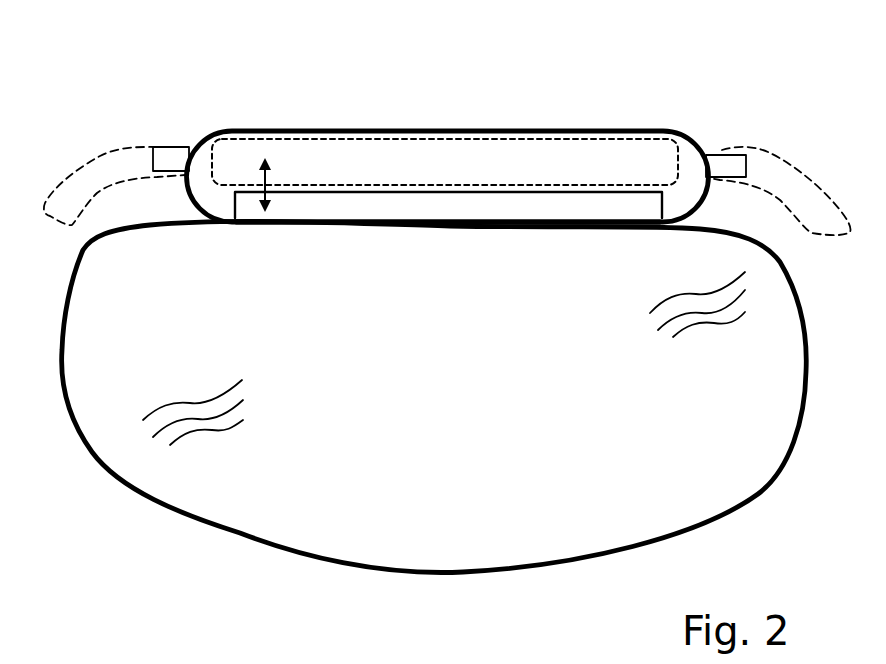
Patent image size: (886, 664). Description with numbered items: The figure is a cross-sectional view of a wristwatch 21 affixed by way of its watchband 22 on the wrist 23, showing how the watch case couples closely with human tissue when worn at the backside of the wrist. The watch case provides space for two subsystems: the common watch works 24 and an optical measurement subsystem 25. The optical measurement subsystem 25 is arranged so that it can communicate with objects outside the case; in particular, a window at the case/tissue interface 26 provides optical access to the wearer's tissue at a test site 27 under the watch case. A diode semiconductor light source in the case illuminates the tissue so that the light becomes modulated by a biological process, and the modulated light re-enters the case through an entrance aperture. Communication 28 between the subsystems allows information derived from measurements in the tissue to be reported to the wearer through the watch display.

The wristwatch 21 is at (257, 128).
The watchband 22 is at (122, 157).
The wrist 23 is at (370, 523).
The common watch works 24 is at (640, 158).
The optical measurement subsystem 25 is at (483, 205).
The case/tissue interface 26 is at (410, 223).
The test site 27 is at (490, 287).
The communication 28 is at (268, 175).